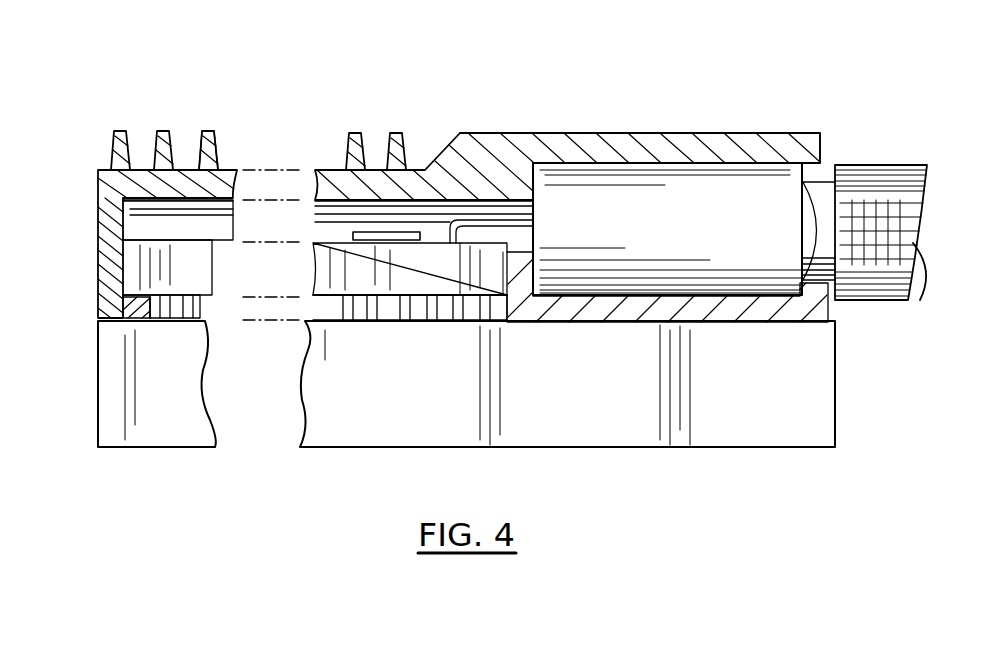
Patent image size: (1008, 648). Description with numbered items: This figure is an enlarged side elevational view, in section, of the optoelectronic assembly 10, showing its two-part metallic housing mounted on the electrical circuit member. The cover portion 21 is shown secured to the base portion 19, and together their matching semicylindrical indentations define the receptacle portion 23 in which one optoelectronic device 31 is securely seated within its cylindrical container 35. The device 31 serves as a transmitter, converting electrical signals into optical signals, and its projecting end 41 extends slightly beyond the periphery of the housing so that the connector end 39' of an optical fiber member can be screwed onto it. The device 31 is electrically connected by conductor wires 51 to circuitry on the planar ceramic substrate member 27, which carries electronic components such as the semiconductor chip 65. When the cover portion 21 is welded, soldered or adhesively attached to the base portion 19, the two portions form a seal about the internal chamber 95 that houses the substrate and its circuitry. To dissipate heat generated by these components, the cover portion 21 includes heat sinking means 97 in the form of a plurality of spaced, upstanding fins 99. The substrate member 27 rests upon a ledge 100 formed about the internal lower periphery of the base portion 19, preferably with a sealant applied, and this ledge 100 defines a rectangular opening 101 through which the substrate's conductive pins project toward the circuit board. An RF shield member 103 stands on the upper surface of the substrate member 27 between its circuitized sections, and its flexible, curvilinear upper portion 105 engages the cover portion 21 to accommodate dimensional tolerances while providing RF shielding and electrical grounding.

The optoelectronic assembly 10 is at (251, 44).
The base portion 19 is at (110, 282).
The cover portion 21 is at (98, 172).
The receptacle portion 23 is at (728, 322).
The substrate member 27 is at (422, 322).
The optoelectronic device 31 is at (679, 228).
The container 35 is at (716, 163).
The connector end 39' is at (881, 205).
The projecting end 41 is at (848, 168).
The conductor wires 51 is at (462, 215).
The semiconductor chip 65 is at (382, 232).
The internal chamber 95 is at (140, 234).
The heat sinking means 97 is at (115, 88).
The upstanding fins 99 is at (213, 131).
The ledge 100 is at (125, 307).
The rectangular opening 101 is at (322, 322).
The RF shield member 103 is at (248, 216).
The flexible upper portion 105 is at (310, 170).